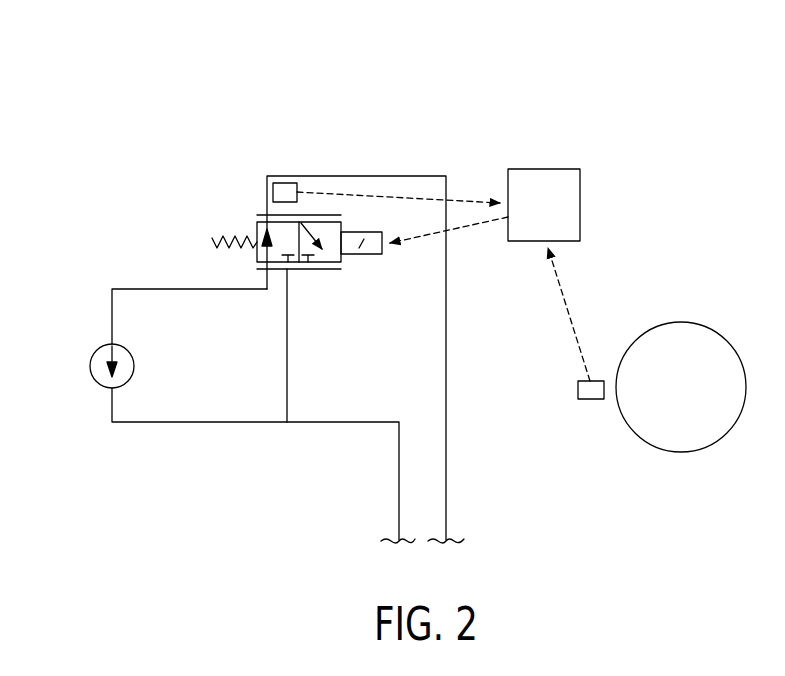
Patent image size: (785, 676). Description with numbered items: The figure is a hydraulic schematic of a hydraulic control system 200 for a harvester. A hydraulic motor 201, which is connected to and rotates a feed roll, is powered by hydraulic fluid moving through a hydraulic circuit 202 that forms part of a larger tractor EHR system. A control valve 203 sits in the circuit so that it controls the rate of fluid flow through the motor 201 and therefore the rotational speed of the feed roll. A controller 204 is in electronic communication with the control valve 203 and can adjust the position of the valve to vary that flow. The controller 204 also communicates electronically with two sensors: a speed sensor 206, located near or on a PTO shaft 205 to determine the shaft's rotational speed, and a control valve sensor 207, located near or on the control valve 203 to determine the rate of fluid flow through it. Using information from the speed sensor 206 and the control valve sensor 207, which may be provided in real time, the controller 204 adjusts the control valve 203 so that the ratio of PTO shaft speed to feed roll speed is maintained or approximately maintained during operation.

The hydraulic control system 200 is at (453, 84).
The hydraulic motor 201 is at (90, 366).
The hydraulic circuit 202 is at (210, 423).
The control valve 203 is at (256, 226).
The controller 204 is at (580, 190).
The PTO shaft 205 is at (713, 331).
The speed sensor 206 is at (590, 400).
The control valve sensor 207 is at (288, 183).